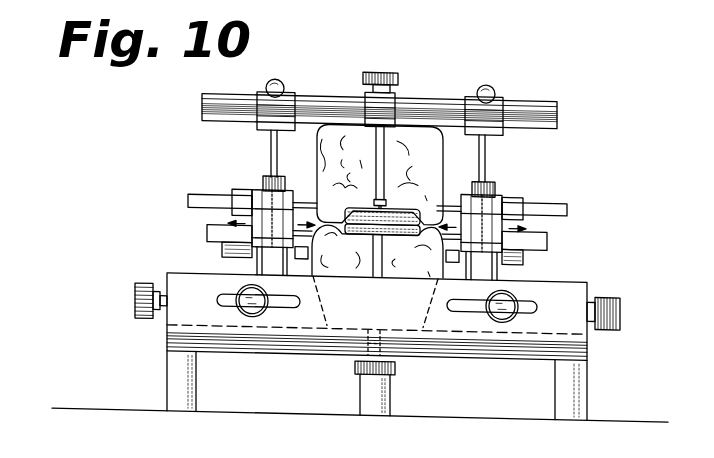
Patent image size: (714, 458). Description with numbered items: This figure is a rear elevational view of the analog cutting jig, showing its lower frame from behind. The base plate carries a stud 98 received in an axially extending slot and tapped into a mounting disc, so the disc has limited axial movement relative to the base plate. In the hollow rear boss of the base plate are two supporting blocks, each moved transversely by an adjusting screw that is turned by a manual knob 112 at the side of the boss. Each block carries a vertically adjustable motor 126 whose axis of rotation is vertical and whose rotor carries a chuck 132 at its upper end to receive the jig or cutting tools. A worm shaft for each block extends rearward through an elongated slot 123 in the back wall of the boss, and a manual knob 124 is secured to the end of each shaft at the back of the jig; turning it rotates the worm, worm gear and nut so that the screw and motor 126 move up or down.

The stud 98 is at (345, 360).
The manual knob 112 is at (146, 268).
The elongated slot 123 is at (298, 298).
The manual knob 124 is at (243, 282).
The motor 126 is at (297, 181).
The chuck 132 is at (262, 181).